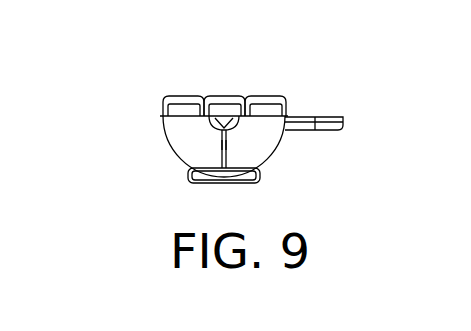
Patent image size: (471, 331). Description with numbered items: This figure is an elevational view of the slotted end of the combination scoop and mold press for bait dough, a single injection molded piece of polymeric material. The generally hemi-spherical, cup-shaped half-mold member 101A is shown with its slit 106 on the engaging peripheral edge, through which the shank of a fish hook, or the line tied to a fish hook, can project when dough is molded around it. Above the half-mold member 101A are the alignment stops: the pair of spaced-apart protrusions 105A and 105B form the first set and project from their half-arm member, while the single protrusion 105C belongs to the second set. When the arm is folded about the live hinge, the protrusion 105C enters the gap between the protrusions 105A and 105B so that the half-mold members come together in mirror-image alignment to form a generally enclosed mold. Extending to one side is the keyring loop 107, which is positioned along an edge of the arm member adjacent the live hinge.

The half-mold member 101A is at (252, 145).
The protrusion 105A is at (263, 100).
The protrusion 105B is at (182, 103).
The protrusion 105C is at (220, 103).
The slit 106 is at (219, 141).
The keyring loop 107 is at (330, 126).